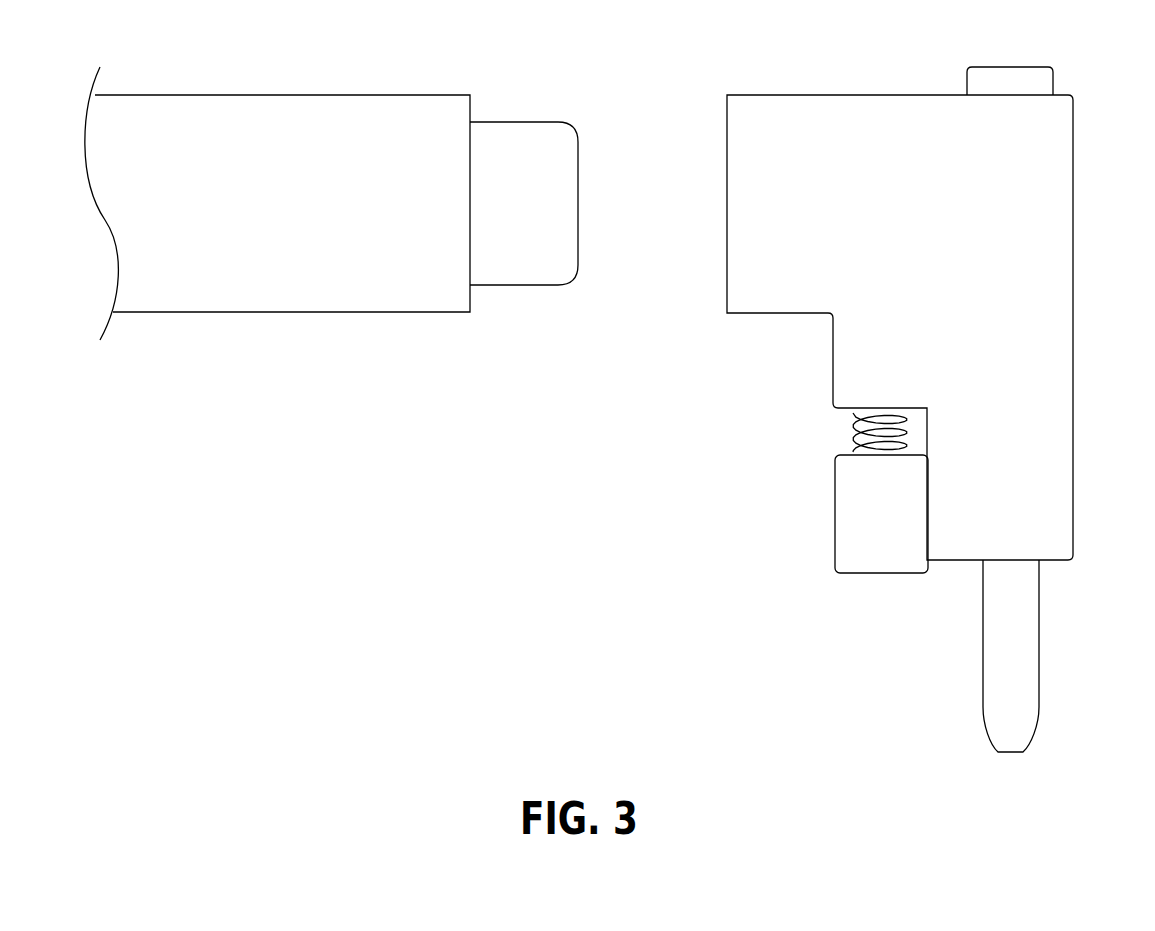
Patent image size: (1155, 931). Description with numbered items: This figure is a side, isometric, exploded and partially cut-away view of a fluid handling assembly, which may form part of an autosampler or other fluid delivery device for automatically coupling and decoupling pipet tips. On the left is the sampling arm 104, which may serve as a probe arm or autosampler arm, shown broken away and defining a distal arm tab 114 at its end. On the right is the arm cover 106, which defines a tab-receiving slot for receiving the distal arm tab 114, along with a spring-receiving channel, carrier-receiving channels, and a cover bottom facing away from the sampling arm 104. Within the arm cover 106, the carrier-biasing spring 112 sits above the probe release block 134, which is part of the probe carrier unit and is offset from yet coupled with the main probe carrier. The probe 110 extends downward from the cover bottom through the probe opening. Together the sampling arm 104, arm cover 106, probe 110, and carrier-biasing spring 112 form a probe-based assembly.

The sampling arm 104 is at (263, 76).
The distal arm tab 114 is at (510, 120).
The arm cover 106 is at (867, 76).
The carrier-biasing spring 112 is at (853, 424).
The probe release block 134 is at (845, 515).
The probe 110 is at (1027, 626).